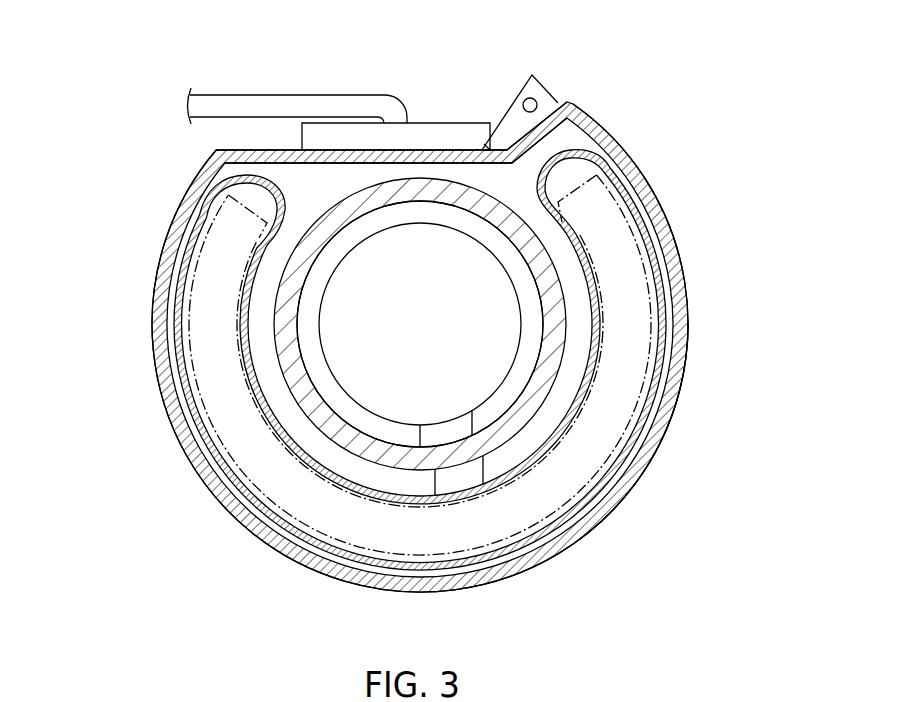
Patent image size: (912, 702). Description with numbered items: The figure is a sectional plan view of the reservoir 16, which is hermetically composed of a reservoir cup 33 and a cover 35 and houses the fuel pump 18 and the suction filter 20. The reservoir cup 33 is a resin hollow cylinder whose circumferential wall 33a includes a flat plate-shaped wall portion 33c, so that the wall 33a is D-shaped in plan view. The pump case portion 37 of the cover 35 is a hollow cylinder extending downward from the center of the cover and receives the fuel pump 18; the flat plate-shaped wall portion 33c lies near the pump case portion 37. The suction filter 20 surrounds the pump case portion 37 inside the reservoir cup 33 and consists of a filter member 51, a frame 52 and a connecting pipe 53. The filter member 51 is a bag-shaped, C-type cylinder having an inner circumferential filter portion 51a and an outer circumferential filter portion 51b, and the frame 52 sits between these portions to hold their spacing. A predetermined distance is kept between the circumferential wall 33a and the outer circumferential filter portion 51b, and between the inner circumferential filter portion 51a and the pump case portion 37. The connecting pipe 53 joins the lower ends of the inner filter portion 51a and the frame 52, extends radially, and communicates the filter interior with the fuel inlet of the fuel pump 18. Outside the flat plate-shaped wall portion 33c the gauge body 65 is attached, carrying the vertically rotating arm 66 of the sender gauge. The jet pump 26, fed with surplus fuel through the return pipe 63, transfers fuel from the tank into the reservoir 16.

The reservoir 16 is at (684, 259).
The fuel pump 18 is at (458, 230).
The suction filter 20 is at (580, 143).
The jet pump 26 is at (531, 72).
The reservoir cup 33 is at (688, 316).
The circumferential wall 33a is at (679, 398).
The flat plate-shaped wall portion 33c is at (257, 150).
The cover 35 is at (420, 324).
The pump case portion 37 is at (283, 320).
The filter member 51 is at (599, 149).
The inner circumferential filter portion 51a is at (557, 433).
The outer circumferential filter portion 51b is at (550, 527).
The frame 52 is at (622, 362).
The connecting pipe 53 is at (463, 475).
The return pipe 63 is at (537, 98).
The gauge body 65 is at (430, 138).
The arm 66 is at (322, 106).